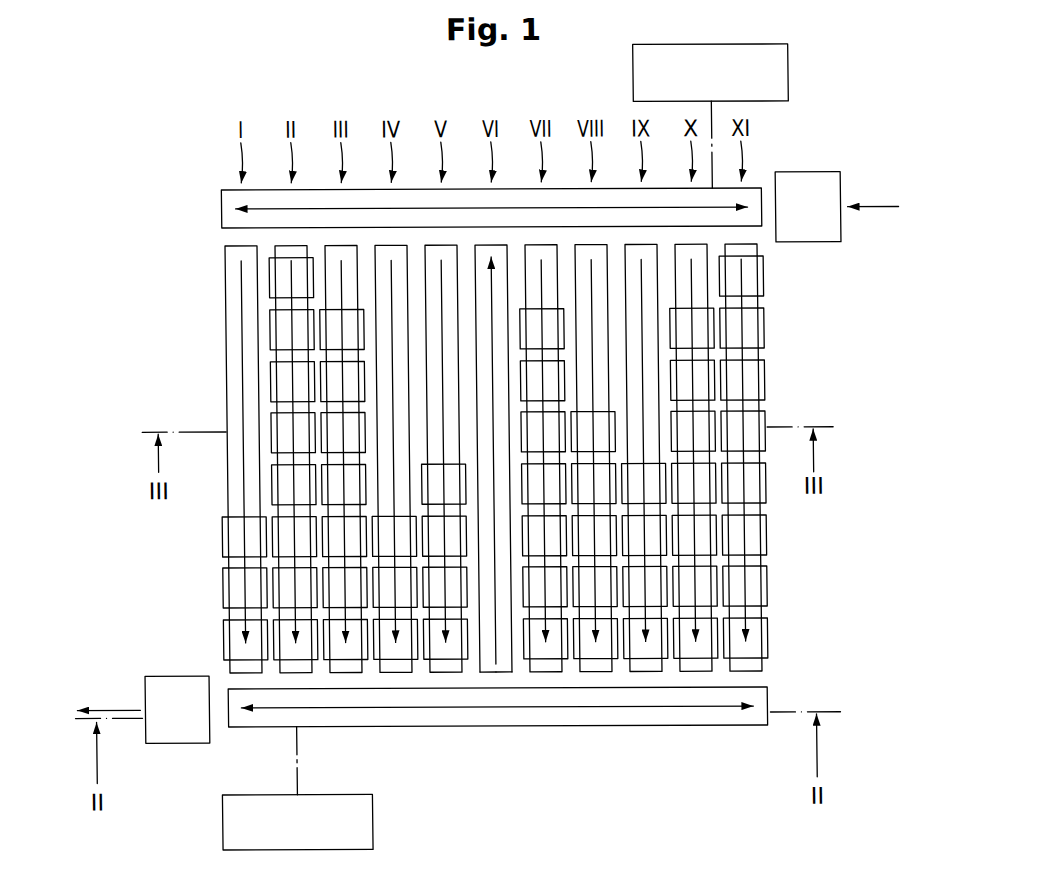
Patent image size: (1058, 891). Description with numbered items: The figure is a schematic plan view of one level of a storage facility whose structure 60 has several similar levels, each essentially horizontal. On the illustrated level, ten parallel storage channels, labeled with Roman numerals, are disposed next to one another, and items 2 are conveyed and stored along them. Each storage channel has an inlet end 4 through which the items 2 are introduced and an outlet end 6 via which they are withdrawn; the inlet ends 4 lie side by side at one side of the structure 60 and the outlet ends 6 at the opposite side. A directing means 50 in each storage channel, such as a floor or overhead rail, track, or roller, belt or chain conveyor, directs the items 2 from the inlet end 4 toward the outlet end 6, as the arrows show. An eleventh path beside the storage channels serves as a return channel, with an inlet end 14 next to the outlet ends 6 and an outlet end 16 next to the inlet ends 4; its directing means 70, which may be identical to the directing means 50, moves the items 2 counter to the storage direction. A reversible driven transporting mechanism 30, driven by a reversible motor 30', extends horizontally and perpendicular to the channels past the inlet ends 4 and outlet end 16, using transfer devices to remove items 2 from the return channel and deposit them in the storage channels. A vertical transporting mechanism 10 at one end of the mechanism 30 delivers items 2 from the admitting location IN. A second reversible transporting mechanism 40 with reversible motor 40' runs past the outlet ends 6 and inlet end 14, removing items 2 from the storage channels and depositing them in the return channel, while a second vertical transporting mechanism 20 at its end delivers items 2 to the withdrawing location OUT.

The items 2 is at (279, 328).
The inlet end 4 is at (489, 464).
The outlet end 6 is at (759, 673).
The vertical transporting mechanism 10 is at (799, 184).
The inlet end of return channel 14 is at (508, 676).
The outlet end of return channel 16 is at (497, 464).
The second vertical transporting mechanism 20 is at (181, 727).
The driven transporting mechanism 30 is at (454, 195).
The reversible motor 30' is at (743, 116).
The driven transporting mechanism 40 is at (498, 741).
The reversible motor 40' is at (331, 788).
The directing means 50 is at (231, 338).
The structure 60 is at (445, 464).
The directing means 70 is at (481, 669).